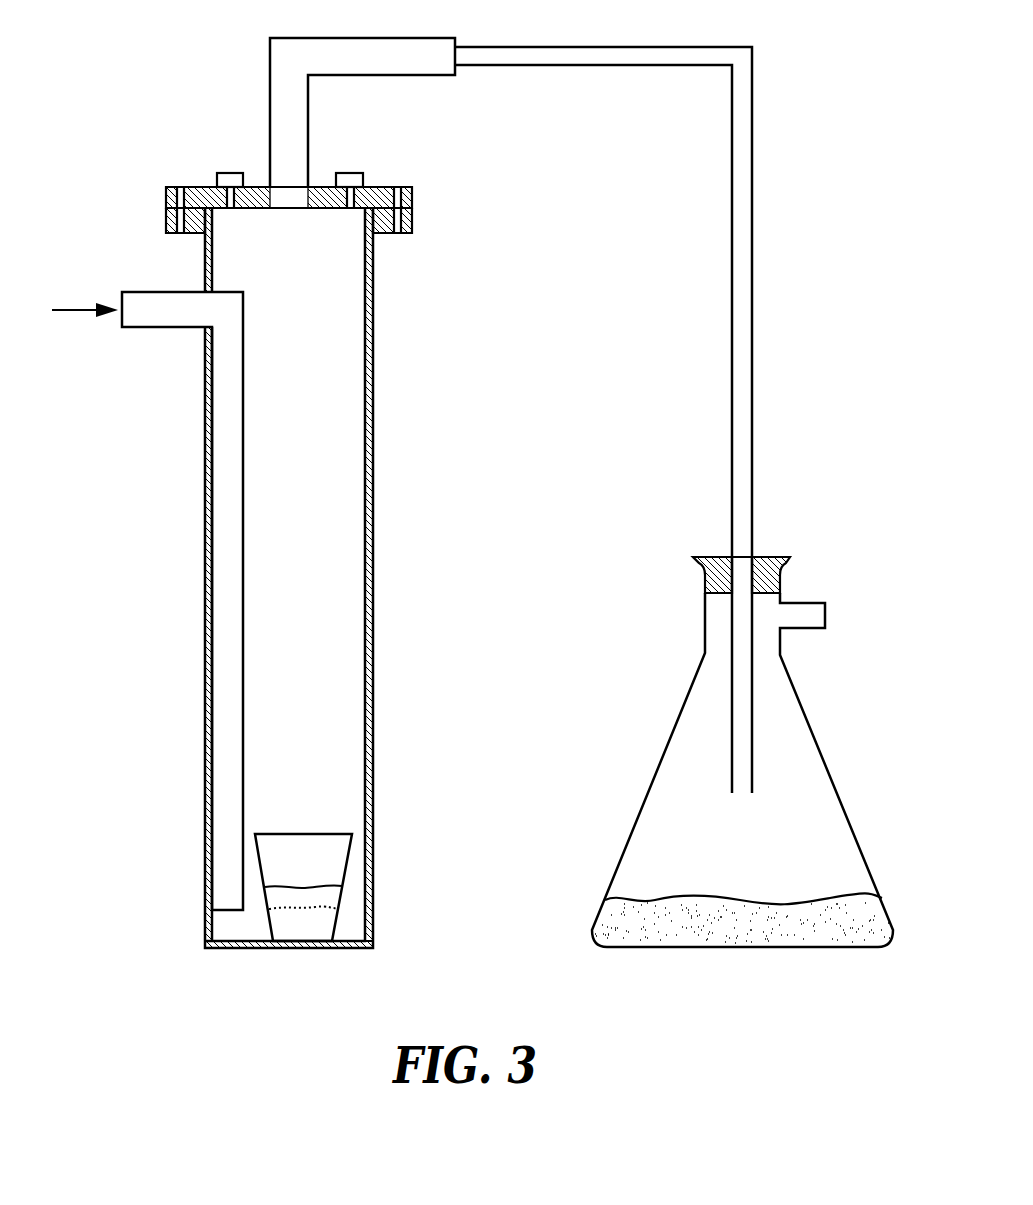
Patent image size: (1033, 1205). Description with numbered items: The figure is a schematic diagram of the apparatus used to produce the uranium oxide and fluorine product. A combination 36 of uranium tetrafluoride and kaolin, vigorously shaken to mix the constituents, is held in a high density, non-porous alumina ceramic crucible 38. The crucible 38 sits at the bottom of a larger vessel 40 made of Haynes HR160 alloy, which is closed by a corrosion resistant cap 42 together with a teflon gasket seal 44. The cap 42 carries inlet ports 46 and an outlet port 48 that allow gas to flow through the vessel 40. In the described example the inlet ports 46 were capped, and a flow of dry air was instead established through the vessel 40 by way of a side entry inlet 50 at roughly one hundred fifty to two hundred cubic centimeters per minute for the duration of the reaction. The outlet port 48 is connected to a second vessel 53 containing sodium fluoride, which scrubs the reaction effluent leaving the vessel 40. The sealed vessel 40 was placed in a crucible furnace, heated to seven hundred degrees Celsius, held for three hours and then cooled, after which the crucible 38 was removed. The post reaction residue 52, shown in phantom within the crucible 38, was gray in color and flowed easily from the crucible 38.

The combination 36 is at (325, 896).
The ceramic crucible 38 is at (335, 853).
The vessel 40 is at (373, 686).
The cap 42 is at (413, 186).
The gasket seal 44 is at (414, 205).
The inlet ports 46 is at (226, 172).
The outlet port 48 is at (270, 56).
The side entry inlet 50 is at (75, 306).
The post reaction residue 52 is at (323, 926).
The second vessel 53 is at (838, 790).